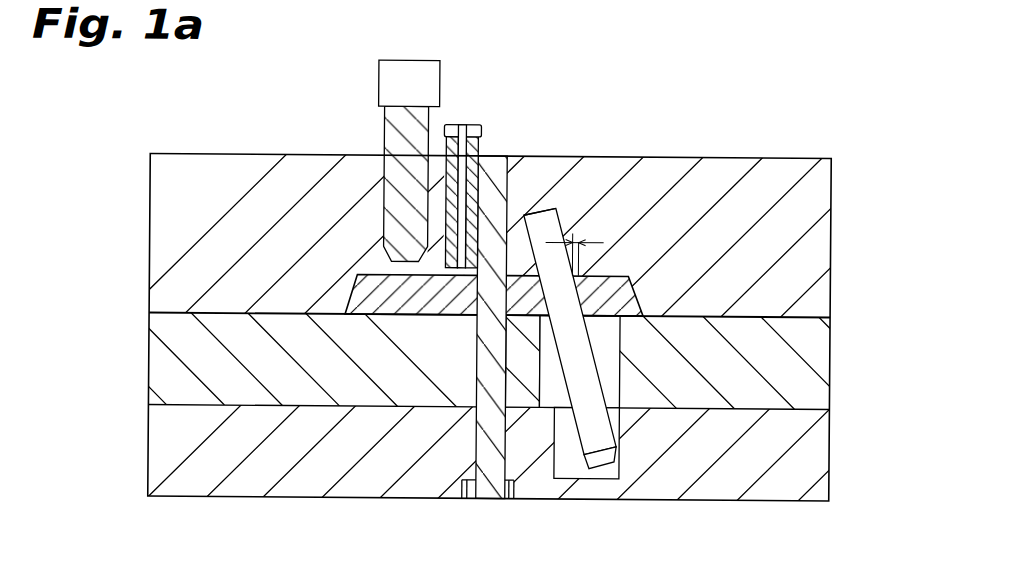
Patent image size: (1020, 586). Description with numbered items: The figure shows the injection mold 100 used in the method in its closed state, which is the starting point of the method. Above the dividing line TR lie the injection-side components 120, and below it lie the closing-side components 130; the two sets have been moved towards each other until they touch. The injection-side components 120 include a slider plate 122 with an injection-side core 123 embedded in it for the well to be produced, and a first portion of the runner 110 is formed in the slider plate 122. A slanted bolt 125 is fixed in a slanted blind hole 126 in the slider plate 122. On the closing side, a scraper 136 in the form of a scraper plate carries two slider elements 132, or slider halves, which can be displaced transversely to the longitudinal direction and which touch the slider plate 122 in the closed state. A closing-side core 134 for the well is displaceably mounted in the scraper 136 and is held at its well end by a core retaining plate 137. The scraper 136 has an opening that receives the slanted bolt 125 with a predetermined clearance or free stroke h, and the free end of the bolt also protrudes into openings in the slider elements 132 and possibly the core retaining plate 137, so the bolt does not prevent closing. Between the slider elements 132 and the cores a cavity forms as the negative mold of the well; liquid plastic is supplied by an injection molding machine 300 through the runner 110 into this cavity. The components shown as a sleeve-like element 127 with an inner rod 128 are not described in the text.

The injection mold 100 is at (161, 130).
The runner 110 is at (400, 150).
The injection-side components 120 is at (140, 156).
The slider plate 122 is at (813, 217).
The injection-side core 123 is at (495, 170).
The slanted bolt 125 is at (580, 366).
The slanted blind hole 126 is at (540, 216).
The sleeve 127 is at (466, 123).
The inner rod 128 is at (449, 126).
The closing-side components 130 is at (140, 316).
The slider elements 132 is at (360, 292).
The closing-side core 134 is at (490, 488).
The scraper 136 is at (812, 352).
The core retaining plate 137 is at (813, 449).
The injection molding machine 300 is at (390, 89).
The dividing line TR is at (148, 315).
The free stroke h is at (574, 242).